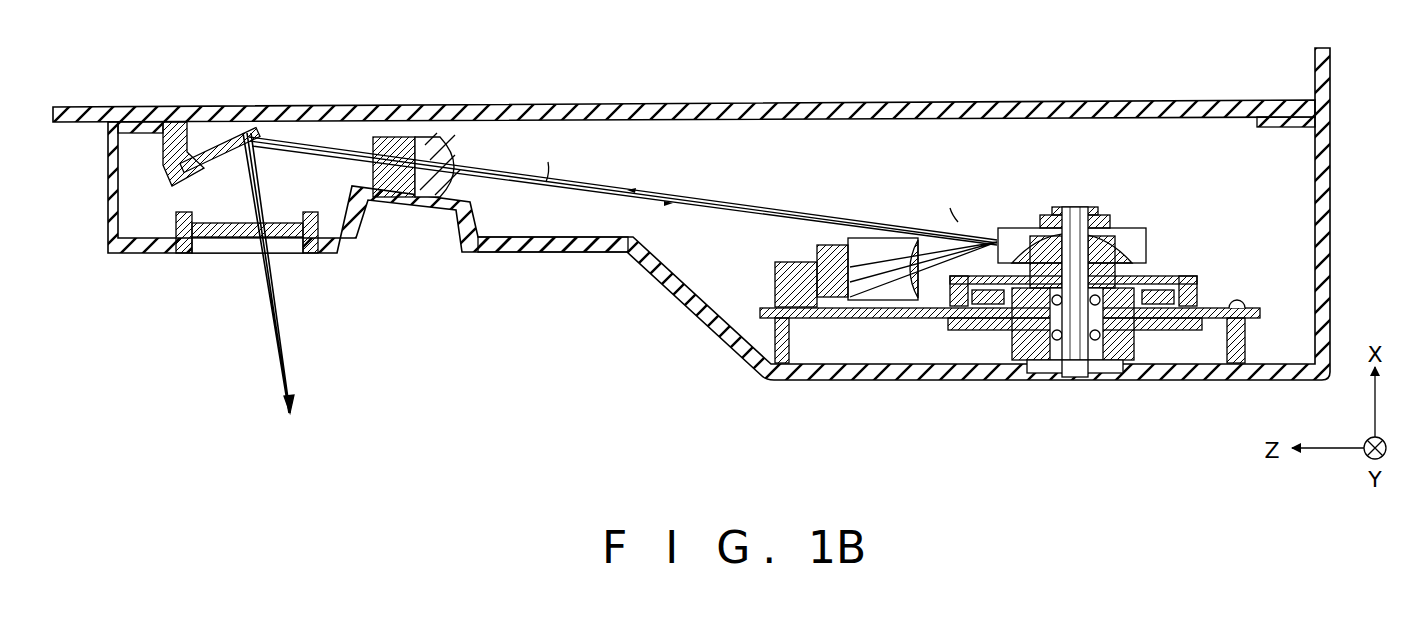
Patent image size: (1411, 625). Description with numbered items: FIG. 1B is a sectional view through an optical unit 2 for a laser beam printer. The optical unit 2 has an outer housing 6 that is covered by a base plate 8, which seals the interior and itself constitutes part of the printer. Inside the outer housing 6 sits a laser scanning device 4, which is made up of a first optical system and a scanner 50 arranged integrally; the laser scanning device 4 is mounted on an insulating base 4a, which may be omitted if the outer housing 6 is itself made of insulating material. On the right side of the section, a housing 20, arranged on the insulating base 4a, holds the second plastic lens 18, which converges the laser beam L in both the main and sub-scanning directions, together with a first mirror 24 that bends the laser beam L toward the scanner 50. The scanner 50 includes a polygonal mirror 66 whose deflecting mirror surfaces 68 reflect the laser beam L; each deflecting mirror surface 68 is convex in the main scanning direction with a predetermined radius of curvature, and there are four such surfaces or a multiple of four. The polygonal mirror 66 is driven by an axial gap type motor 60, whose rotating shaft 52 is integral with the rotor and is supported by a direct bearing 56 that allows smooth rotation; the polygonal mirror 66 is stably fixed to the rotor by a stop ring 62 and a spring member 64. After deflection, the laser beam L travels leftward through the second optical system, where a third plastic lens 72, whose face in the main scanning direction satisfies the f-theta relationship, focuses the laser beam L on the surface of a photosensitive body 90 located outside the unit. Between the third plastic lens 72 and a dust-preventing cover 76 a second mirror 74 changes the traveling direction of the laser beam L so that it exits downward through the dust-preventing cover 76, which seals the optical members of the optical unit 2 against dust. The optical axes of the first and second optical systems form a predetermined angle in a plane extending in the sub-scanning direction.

The optical unit 2 is at (1148, 100).
The laser scanning device 4 is at (1262, 306).
The insulating base 4a is at (1236, 300).
The outer housing 6 is at (540, 253).
The base plate 8 is at (808, 103).
The second plastic lens 18 is at (912, 240).
The housing 20 is at (778, 262).
The first mirror 24 is at (852, 245).
The scanner 50 is at (1088, 286).
The rotating shaft 52 is at (1072, 207).
The direct bearing 56 is at (1100, 377).
The axial gap type motor 60 is at (1175, 330).
The stop ring 62 is at (1100, 215).
The spring member 64 is at (1040, 215).
The polygonal mirror 66 is at (1003, 228).
The deflecting mirror surface 68 is at (1150, 246).
The third plastic lens 72 is at (435, 137).
The second mirror 74 is at (215, 130).
The dust-preventing cover 76 is at (208, 255).
The photosensitive body 90 is at (316, 438).
The laser beam L is at (620, 273).